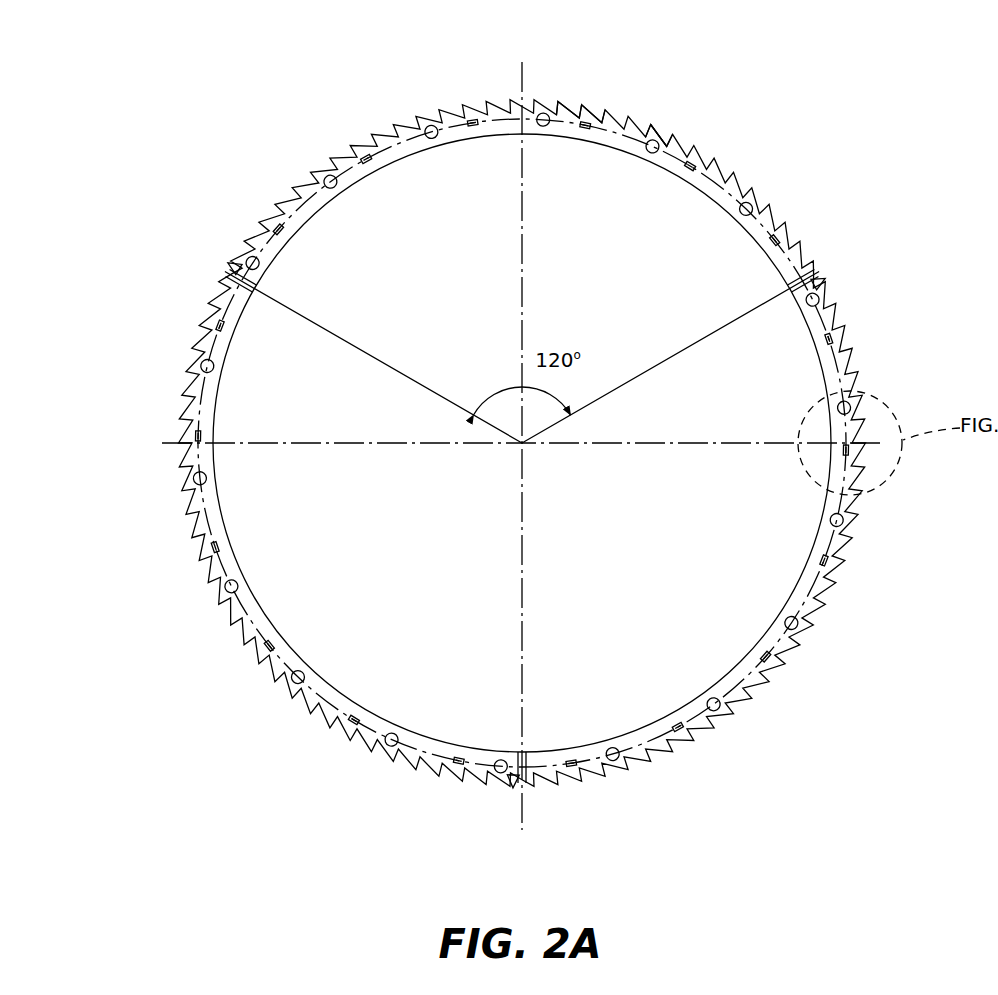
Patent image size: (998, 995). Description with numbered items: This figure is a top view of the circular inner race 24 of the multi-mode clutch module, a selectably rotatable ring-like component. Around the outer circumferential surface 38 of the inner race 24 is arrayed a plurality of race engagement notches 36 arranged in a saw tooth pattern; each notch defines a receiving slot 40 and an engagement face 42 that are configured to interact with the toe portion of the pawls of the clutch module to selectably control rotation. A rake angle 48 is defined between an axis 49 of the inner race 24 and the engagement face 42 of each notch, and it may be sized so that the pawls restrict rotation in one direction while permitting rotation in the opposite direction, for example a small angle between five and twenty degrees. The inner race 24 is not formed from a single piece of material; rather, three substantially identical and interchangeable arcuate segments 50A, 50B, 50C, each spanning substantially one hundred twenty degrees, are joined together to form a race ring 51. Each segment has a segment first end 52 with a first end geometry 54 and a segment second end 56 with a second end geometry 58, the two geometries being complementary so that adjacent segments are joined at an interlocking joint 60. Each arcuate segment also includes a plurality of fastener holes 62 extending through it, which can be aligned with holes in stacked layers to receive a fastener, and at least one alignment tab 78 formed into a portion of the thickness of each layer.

The inner race 24 is at (208, 258).
The race engagement notches 36 is at (556, 104).
The outer circumferential surface 38 is at (768, 184).
The receiving slot 40 is at (665, 126).
The engagement face 42 is at (672, 136).
The rake angle 48 is at (858, 454).
The axis 49 is at (700, 450).
The arcuate segment 50A is at (447, 100).
The arcuate segment 50B is at (860, 540).
The arcuate segment 50C is at (275, 672).
The race ring 51 is at (207, 630).
The segment first end 52 is at (247, 258).
The first end geometry 54 is at (236, 277).
The segment second end 56 is at (250, 288).
The second end geometry 58 is at (243, 291).
The interlocking joint 60 is at (880, 262).
The fastener holes 62 is at (325, 176).
The alignment tab 78 is at (364, 152).